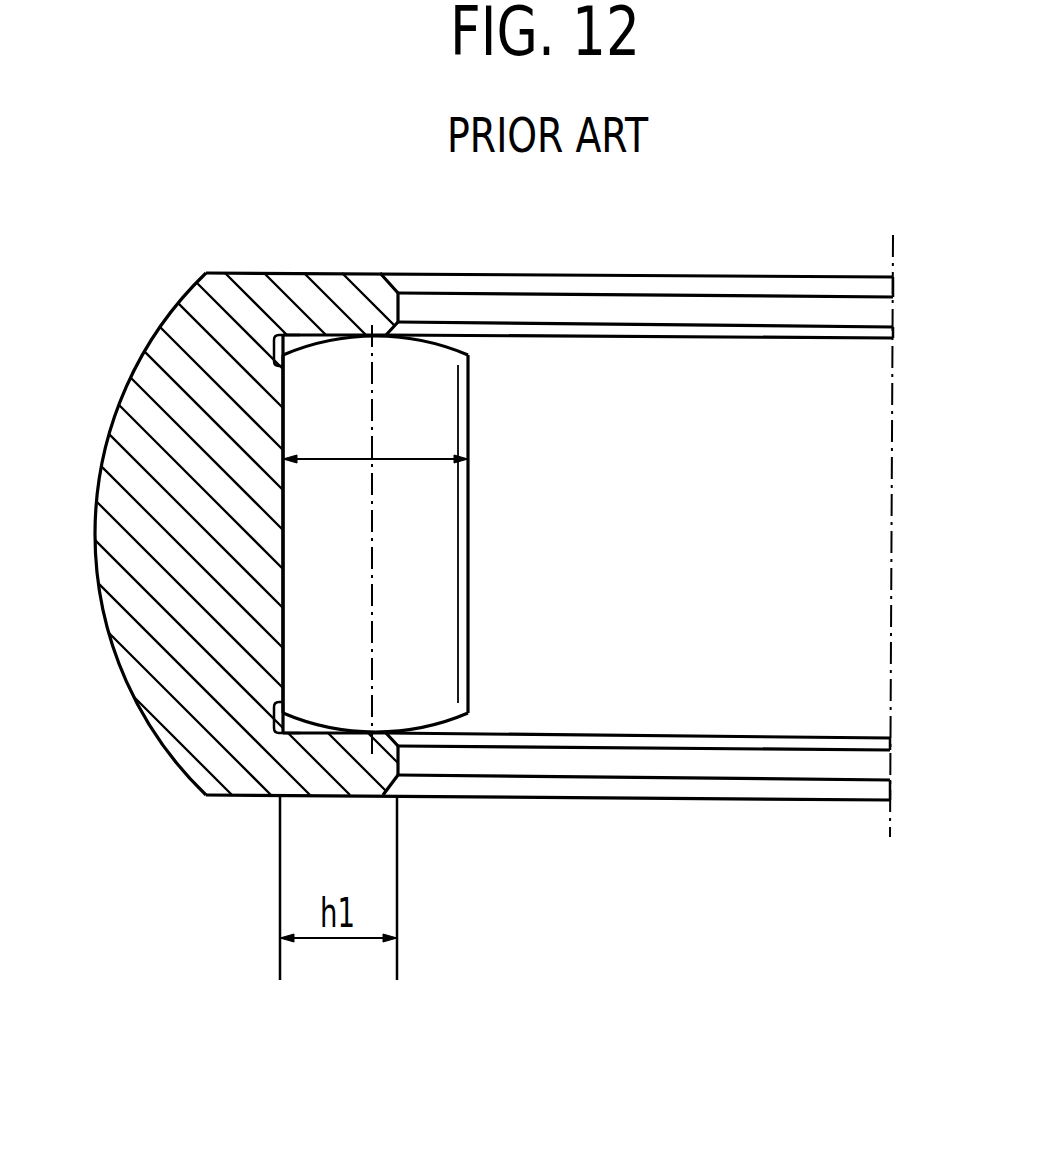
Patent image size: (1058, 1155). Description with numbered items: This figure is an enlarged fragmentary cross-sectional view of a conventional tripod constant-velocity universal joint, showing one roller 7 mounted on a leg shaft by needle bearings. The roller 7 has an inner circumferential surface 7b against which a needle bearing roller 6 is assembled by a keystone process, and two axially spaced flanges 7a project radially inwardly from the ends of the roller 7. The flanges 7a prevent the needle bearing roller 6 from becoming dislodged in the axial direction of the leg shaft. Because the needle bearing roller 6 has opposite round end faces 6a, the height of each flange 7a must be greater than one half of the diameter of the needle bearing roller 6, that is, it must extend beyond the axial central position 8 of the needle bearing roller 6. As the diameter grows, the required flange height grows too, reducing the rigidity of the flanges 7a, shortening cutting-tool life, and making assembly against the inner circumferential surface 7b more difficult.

The needle bearing roller 6 is at (313, 632).
The round end face 6a is at (298, 333).
The roller 7 is at (197, 335).
The flange 7a is at (358, 300).
The inner circumferential surface 7b is at (283, 578).
The axial central position 8 is at (373, 535).